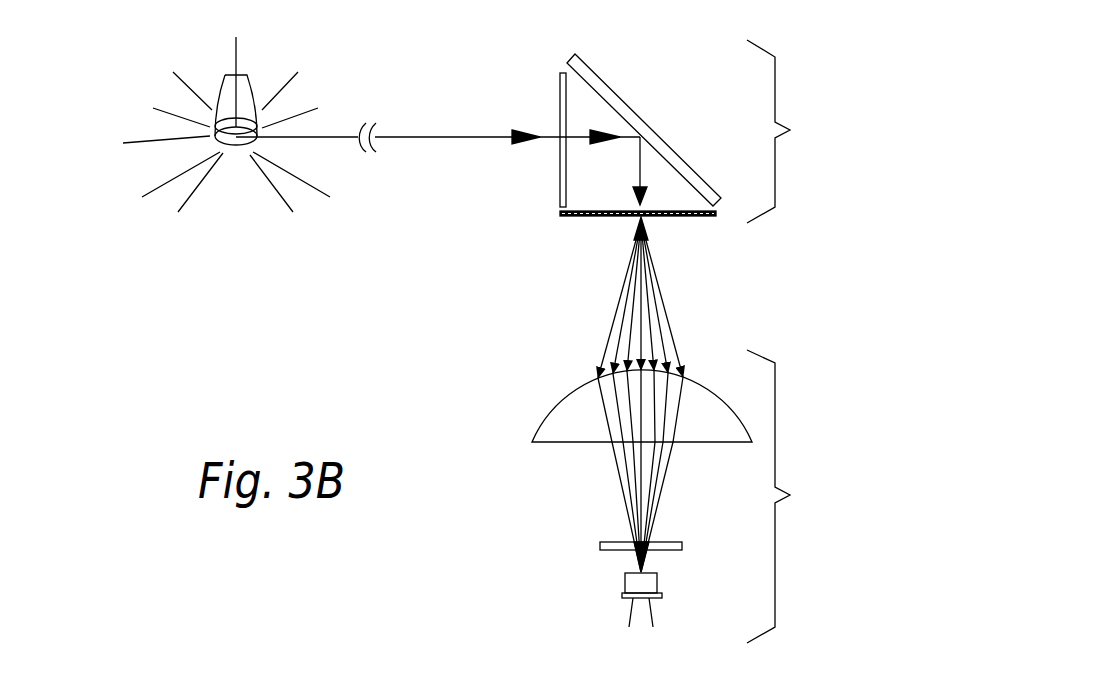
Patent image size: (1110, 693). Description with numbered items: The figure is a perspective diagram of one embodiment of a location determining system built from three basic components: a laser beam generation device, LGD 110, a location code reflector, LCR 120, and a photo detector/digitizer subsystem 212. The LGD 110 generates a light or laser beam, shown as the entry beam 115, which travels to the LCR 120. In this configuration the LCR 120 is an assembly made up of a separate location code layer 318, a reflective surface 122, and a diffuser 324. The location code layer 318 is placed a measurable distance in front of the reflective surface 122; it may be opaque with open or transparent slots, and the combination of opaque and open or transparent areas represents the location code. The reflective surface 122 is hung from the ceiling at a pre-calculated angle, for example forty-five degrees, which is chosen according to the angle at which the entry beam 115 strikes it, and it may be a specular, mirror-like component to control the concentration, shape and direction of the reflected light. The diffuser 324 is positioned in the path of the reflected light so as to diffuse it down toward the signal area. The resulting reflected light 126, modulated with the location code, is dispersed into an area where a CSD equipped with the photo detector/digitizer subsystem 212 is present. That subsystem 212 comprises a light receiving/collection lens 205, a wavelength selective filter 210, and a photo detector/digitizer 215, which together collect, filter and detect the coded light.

The laser beam generation device (LGD) 110 is at (227, 88).
The entry beam 115 is at (425, 138).
The location code layer 318 is at (560, 88).
The reflective surface 122 is at (603, 90).
The diffuser 324 is at (682, 217).
The location code reflector (LCR) 120 is at (796, 131).
The reflected light 126 is at (607, 328).
The light receiving/collection lens 205 is at (532, 441).
The wavelength selective filter 210 is at (598, 546).
The photo detector/digitizer 215 is at (623, 583).
The photo detector/digitizer subsystem 212 is at (796, 496).